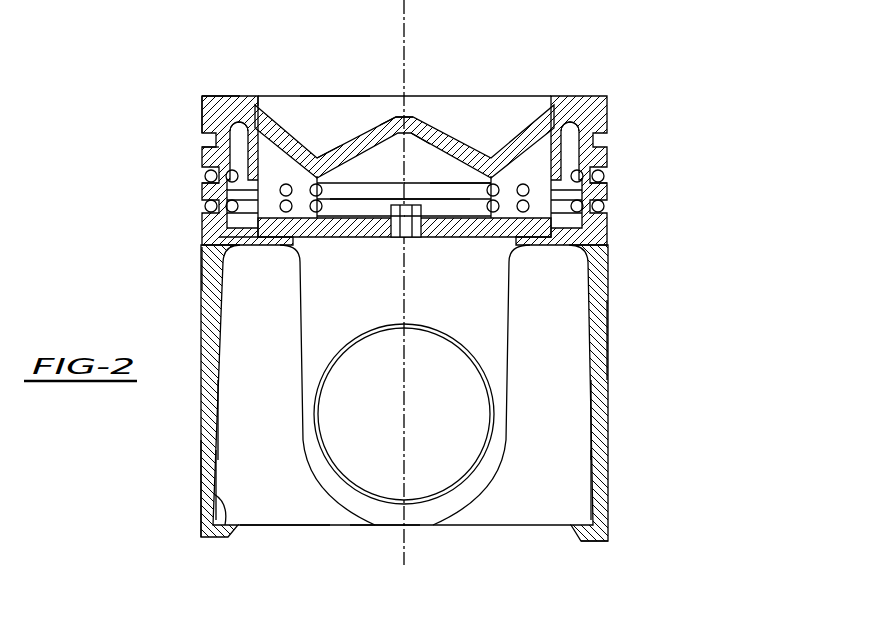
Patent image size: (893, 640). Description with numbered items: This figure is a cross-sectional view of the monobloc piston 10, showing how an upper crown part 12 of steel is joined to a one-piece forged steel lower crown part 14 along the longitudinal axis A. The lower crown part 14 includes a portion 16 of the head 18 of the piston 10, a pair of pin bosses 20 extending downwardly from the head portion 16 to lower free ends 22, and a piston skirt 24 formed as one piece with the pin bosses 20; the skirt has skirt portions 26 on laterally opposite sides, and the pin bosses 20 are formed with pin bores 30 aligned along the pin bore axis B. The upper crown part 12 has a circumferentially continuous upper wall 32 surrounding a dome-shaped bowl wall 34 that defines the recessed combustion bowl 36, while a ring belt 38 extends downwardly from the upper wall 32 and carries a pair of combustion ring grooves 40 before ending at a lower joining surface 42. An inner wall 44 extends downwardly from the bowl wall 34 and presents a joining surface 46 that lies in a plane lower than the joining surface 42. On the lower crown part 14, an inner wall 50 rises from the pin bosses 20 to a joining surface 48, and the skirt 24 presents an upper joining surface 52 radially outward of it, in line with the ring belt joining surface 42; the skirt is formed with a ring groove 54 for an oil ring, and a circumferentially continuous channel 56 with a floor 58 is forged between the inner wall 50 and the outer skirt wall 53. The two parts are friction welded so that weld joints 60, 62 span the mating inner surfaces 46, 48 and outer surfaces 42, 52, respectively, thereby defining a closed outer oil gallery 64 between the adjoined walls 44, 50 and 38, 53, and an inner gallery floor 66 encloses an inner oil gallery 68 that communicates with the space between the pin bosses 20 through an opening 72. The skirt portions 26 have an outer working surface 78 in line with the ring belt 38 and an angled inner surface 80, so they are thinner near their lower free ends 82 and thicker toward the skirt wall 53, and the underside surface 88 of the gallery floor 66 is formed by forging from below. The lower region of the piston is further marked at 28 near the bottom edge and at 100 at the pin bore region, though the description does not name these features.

The monobloc piston 10 is at (707, 138).
The upper crown part 12 is at (607, 97).
The lower crown part 14 is at (609, 316).
The head portion 16 is at (612, 195).
The head 18 is at (222, 95).
The pin bosses 20 is at (343, 496).
The lower free ends 22 is at (386, 528).
The piston skirt 24 is at (200, 492).
The skirt portions 26 is at (600, 440).
The bottom edge 28 is at (287, 512).
The pin bores 30 is at (468, 478).
The upper wall 32 is at (256, 98).
The bowl wall 34 is at (340, 112).
The combustion bowl 36 is at (334, 100).
The ring belt 38 is at (203, 106).
The combustion ring grooves 40 is at (205, 134).
The joining surface 42 is at (208, 190).
The inner wall 44 is at (314, 150).
The joining surface 46 is at (320, 255).
The joining surface 48 is at (215, 238).
The inner wall 50 is at (270, 250).
The upper joining surface 52 is at (208, 152).
The outer skirt wall 53 is at (205, 268).
The ring groove 54 is at (208, 205).
The channel 56 is at (612, 178).
The floor 58 is at (612, 222).
The friction weld joint 60 is at (449, 184).
The friction weld joint 62 is at (248, 124).
The outer oil gallery 64 is at (569, 124).
The inner gallery floor 66 is at (493, 186).
The inner oil gallery 68 is at (420, 140).
The opening 72 is at (396, 150).
The outer working surface 78 is at (612, 340).
The inner surface 80 is at (610, 470).
The lower free ends 82 is at (608, 541).
The underside surface 88 is at (365, 250).
The pin bore 100 is at (436, 335).